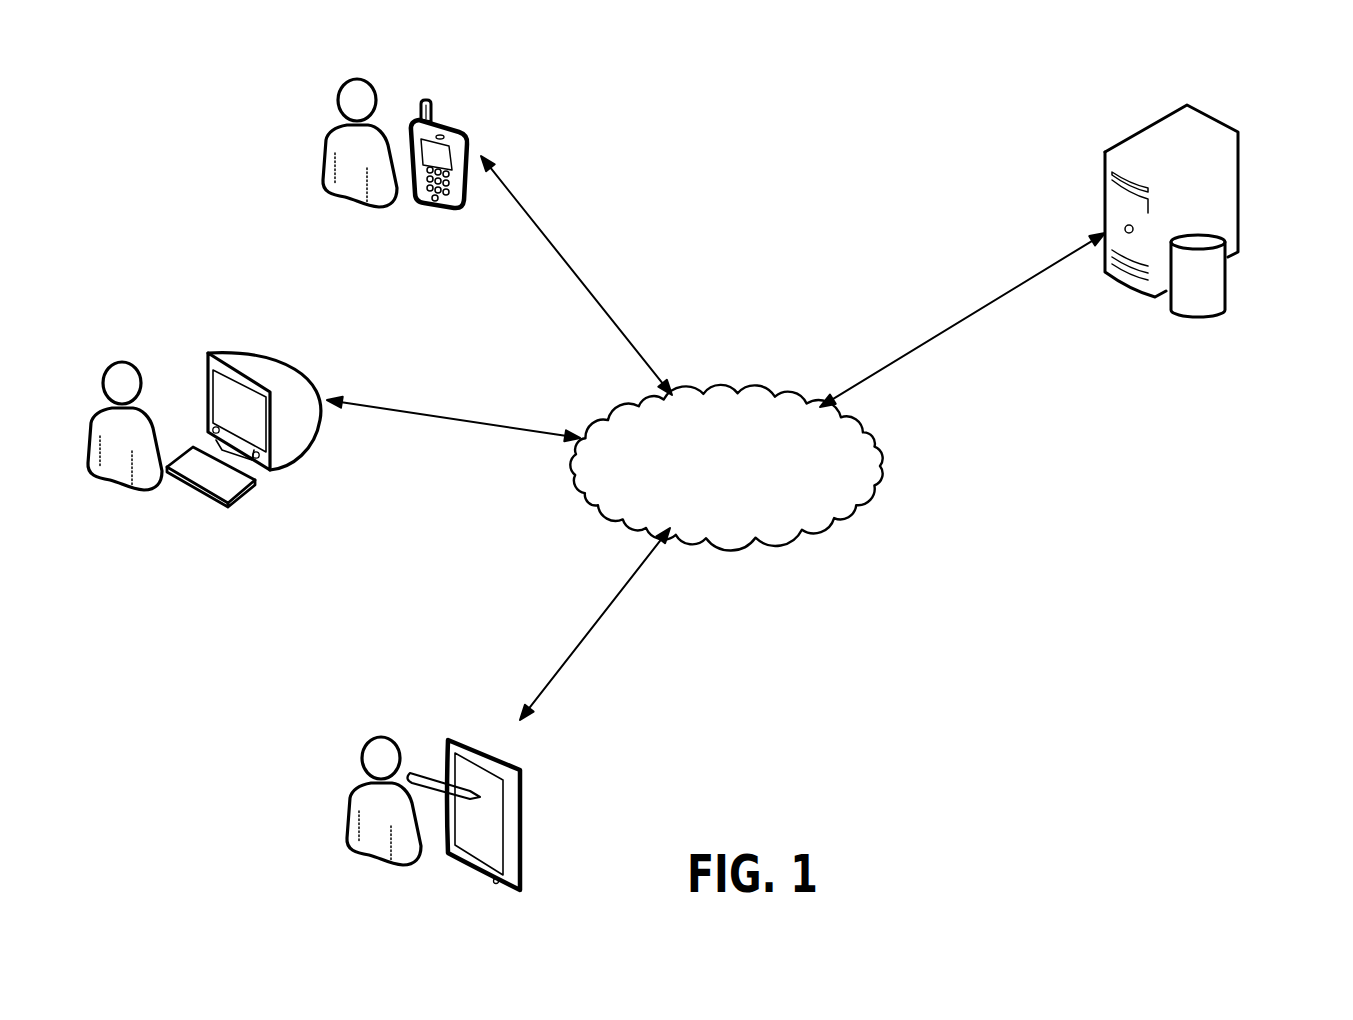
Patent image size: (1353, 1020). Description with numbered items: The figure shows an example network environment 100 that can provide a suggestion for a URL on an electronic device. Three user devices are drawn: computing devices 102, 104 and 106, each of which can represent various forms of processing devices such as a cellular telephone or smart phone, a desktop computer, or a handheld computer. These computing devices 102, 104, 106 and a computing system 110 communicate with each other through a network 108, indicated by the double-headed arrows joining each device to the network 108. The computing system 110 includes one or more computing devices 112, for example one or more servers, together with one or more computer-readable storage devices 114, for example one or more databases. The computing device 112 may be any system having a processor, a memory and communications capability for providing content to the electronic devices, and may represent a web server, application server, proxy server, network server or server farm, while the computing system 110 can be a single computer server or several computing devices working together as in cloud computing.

The network environment 100 is at (858, 118).
The computing device 102 is at (455, 128).
The computing device 104 is at (287, 368).
The computing device 106 is at (520, 770).
The network 108 is at (722, 392).
The computing system 110 is at (1106, 342).
The computing device 112 is at (1217, 120).
The computer-readable storage device 114 is at (1225, 310).